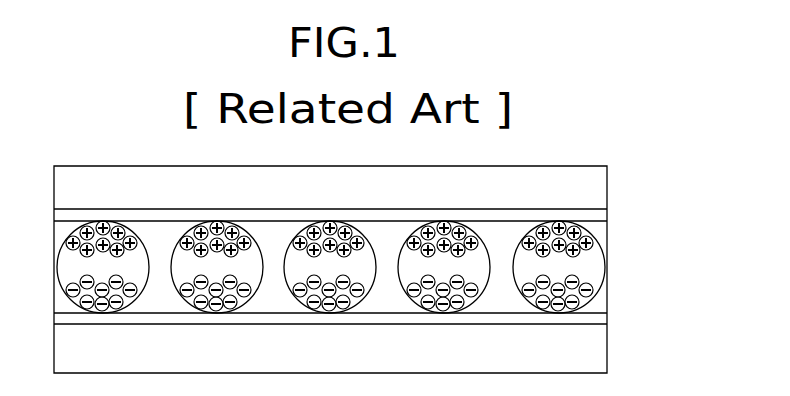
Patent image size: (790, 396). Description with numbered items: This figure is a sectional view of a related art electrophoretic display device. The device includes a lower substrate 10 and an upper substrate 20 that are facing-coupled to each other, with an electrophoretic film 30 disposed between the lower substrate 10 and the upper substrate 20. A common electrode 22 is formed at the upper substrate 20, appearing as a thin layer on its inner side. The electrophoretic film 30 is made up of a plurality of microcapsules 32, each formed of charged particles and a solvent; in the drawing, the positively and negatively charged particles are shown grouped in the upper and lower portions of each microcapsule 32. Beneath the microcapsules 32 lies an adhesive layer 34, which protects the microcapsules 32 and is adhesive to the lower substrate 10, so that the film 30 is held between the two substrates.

The lower substrate 10 is at (597, 350).
The upper substrate 20 is at (597, 187).
The common electrode 22 is at (597, 213).
The electrophoretic film 30 is at (670, 250).
The microcapsules 32 is at (597, 253).
The adhesive layer 34 is at (597, 317).